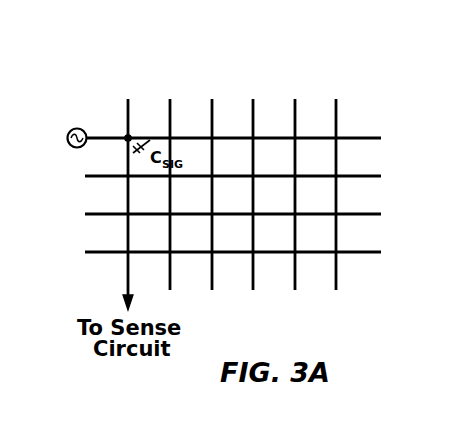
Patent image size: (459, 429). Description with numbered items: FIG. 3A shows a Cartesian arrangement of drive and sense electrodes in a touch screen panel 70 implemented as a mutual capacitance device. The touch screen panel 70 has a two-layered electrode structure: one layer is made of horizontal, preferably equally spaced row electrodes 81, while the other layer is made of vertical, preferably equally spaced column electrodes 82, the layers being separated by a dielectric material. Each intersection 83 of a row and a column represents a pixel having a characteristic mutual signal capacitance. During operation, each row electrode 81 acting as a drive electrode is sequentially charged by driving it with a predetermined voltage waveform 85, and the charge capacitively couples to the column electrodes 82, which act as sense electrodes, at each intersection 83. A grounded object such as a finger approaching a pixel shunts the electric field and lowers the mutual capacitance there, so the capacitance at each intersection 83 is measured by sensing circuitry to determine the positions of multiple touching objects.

The touch screen panel 70 is at (317, 84).
The row electrodes 81 is at (356, 176).
The column electrodes 82 is at (125, 283).
The intersection 83 is at (127, 136).
The predetermined voltage waveform 85 is at (77, 127).